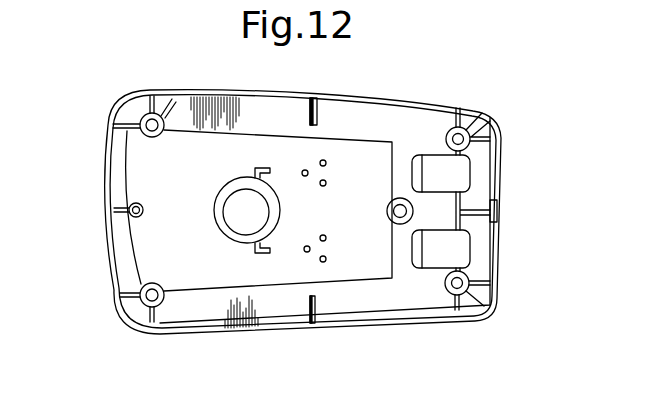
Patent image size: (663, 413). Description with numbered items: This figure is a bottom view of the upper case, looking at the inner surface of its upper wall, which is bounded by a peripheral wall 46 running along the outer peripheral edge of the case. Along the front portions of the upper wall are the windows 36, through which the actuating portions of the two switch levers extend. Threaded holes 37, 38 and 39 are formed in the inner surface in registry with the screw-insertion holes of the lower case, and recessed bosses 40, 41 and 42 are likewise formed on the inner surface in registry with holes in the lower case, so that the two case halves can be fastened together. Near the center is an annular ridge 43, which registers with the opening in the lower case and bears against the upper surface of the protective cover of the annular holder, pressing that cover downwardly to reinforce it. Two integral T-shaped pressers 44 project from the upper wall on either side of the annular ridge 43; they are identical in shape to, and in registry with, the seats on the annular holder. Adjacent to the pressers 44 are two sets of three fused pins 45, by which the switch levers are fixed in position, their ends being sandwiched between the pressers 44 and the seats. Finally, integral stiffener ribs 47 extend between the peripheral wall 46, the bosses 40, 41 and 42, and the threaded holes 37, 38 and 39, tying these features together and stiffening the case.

The windows 36 is at (469, 172).
The threaded hole 37 is at (400, 225).
The threaded hole 38 is at (141, 292).
The threaded hole 39 is at (149, 116).
The recessed boss 40 is at (450, 294).
The recessed boss 41 is at (469, 126).
The recessed boss 42 is at (131, 218).
The annular ridge 43 is at (238, 177).
The T-shaped pressers 44 is at (266, 167).
The fused pins 45 is at (305, 170).
The peripheral wall 46 is at (427, 100).
The stiffener ribs 47 is at (163, 110).